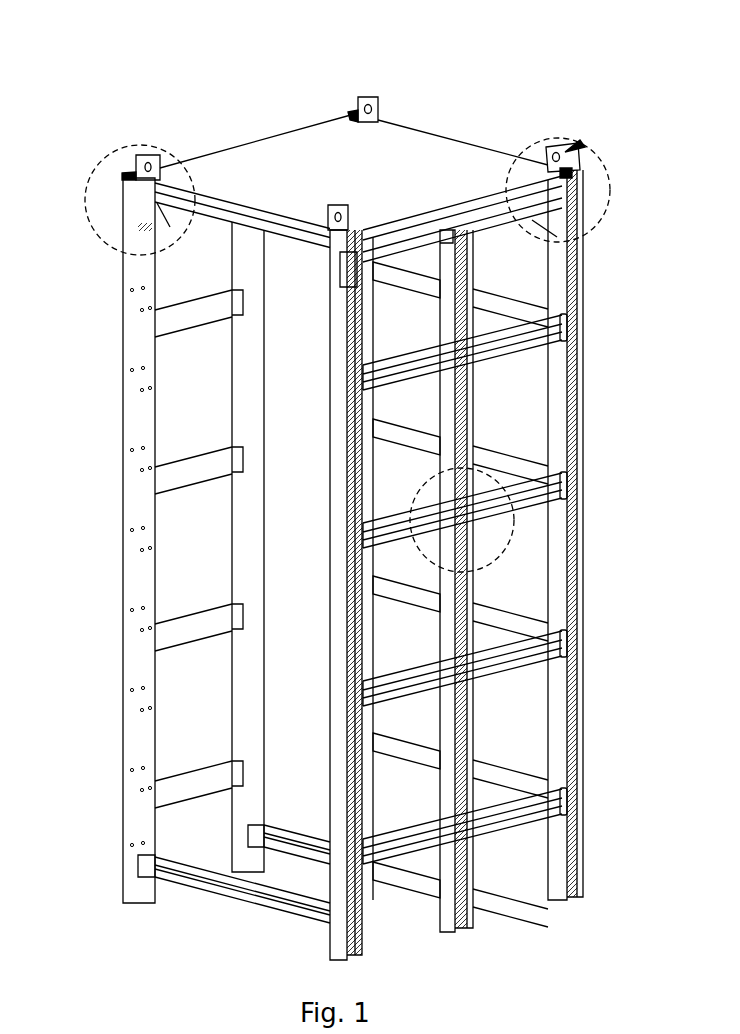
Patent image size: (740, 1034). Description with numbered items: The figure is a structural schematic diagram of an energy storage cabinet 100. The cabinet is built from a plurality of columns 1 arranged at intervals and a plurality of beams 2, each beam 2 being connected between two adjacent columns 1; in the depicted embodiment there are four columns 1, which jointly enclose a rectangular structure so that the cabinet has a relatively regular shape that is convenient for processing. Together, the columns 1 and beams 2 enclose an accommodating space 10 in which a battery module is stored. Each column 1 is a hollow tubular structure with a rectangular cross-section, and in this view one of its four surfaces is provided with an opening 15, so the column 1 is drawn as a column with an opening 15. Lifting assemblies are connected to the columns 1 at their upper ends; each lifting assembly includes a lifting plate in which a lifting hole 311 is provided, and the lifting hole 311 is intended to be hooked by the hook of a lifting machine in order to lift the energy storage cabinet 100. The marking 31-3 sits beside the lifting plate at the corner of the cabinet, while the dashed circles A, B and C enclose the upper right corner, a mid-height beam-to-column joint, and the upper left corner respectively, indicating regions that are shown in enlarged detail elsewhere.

The energy storage cabinet 100 is at (348, 487).
The accommodating space 10 is at (342, 528).
The column 1 is at (600, 498).
The beam 2 is at (578, 320).
The opening 15 is at (592, 408).
The lifting hole 311 is at (578, 145).
The connecting bracket 31-3 is at (580, 162).
The detail region A is at (607, 195).
The detail region B is at (508, 543).
The detail region C is at (88, 203).